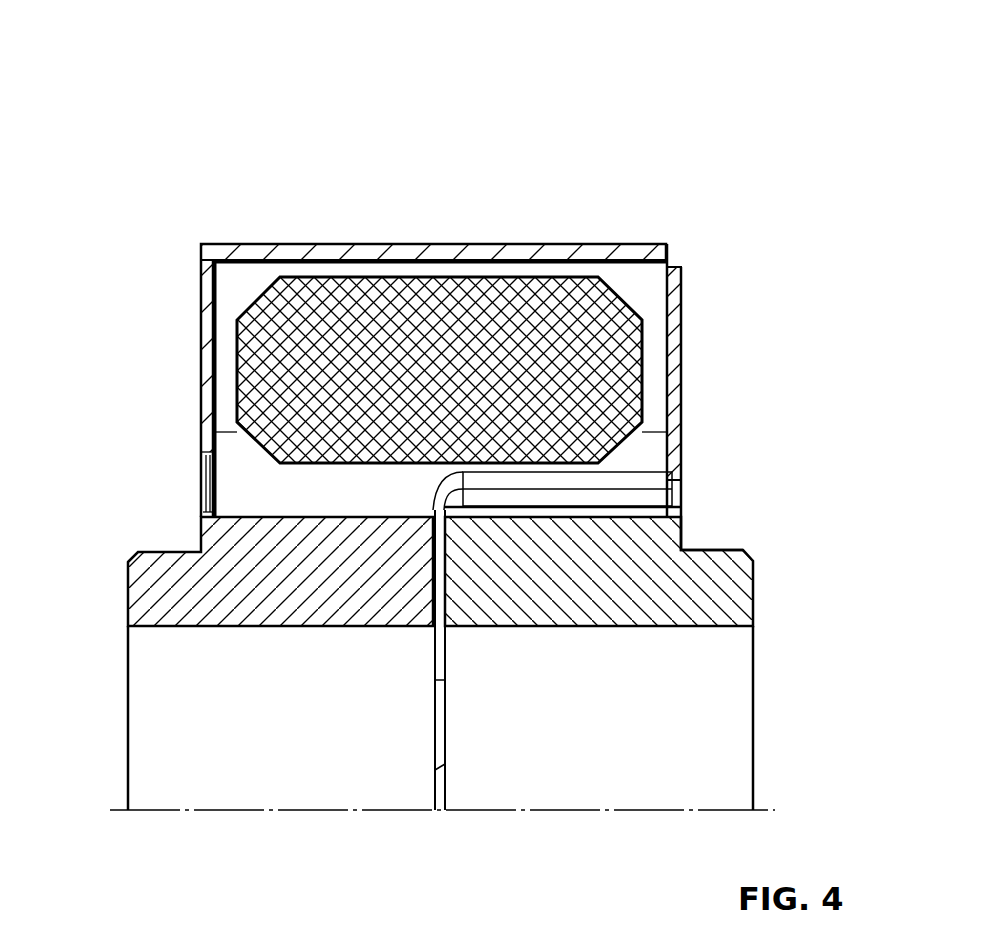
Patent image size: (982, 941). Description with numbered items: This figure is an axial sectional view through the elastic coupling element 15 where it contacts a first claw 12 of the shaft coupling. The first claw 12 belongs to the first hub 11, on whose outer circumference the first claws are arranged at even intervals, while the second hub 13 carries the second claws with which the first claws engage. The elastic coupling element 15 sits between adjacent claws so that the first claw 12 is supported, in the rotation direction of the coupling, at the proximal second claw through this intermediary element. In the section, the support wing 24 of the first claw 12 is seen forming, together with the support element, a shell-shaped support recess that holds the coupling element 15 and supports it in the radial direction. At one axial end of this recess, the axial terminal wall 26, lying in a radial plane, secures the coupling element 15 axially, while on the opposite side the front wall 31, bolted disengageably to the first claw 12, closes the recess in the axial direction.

The first hub 11 is at (113, 590).
The first claw 12 is at (323, 226).
The second hub 13 is at (760, 593).
The elastic coupling element 15 is at (593, 317).
The support wing 24 is at (437, 250).
The axial terminal wall 26 is at (192, 355).
The front wall 31 is at (693, 382).